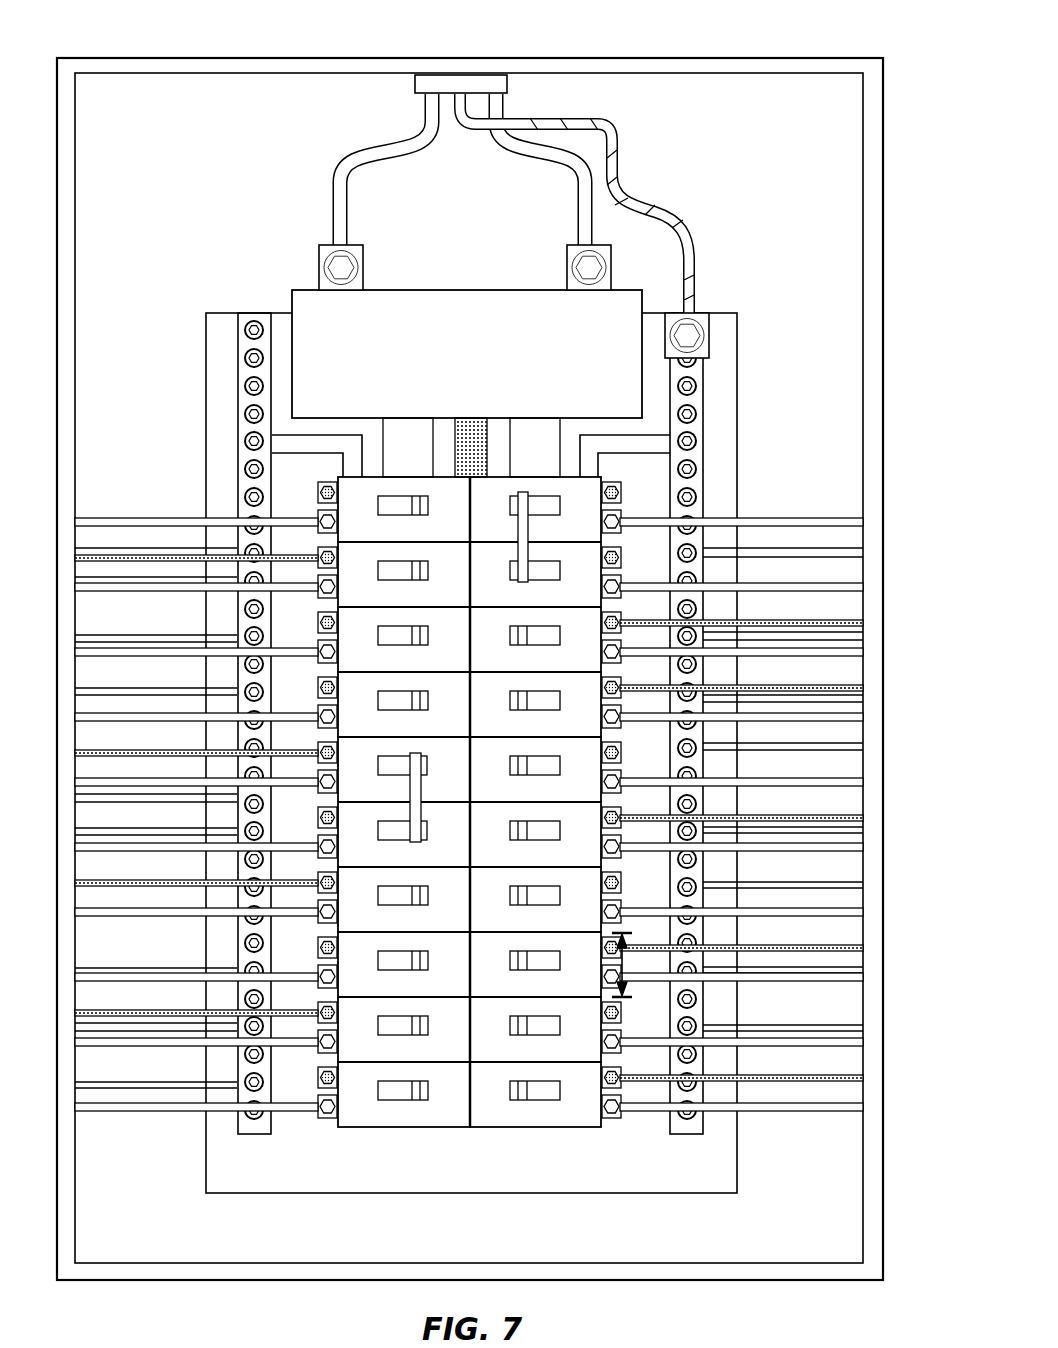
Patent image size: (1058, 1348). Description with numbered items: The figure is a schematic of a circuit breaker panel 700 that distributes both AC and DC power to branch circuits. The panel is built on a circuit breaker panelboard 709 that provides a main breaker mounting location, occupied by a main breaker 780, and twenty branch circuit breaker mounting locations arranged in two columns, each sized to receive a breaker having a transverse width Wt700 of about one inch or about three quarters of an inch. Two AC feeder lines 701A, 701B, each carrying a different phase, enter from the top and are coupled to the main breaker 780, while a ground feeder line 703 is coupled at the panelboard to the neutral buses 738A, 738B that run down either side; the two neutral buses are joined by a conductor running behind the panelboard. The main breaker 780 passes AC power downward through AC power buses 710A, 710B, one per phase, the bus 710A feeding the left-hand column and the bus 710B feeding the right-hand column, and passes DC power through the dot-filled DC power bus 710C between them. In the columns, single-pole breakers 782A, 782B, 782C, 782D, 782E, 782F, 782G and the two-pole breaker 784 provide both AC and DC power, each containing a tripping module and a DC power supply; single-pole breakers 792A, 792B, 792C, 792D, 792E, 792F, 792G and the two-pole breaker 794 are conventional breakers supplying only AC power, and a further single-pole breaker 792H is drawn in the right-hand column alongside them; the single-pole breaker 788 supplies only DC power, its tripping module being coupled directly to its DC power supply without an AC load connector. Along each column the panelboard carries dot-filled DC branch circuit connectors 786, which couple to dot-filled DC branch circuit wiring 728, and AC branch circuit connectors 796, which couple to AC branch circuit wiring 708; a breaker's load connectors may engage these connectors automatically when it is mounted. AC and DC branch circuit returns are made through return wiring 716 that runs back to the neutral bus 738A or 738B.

The circuit breaker panel 700 is at (636, 34).
The AC feeder line 701A is at (345, 172).
The AC feeder line 701B is at (527, 170).
The ground feeder line 703 is at (650, 207).
The circuit breaker panelboard 709 is at (227, 313).
The neutral bus 738A is at (240, 380).
The neutral bus 738B is at (703, 382).
The main breaker 780 is at (425, 288).
The AC power bus 710A is at (412, 430).
The AC power bus 710B is at (538, 430).
The DC power bus 710C is at (463, 423).
The AC branch circuit wiring 708 is at (115, 515).
The DC branch circuit wiring 728 is at (120, 880).
The return wiring 716 is at (113, 1077).
The single-pole branch circuit breaker 792A is at (390, 538).
The single-pole branch circuit breaker 792B is at (390, 668).
The single-pole branch circuit breaker 792C is at (390, 733).
The single-pole branch circuit breaker 792D is at (390, 993).
The single-pole branch circuit breaker 792E is at (390, 1123).
The single-pole branch circuit breaker 792F is at (523, 798).
The single-pole branch circuit breaker 792G is at (523, 928).
The circuit breaker 792H is at (523, 1058).
The single-pole branch circuit breaker 782A is at (416, 603).
The single-pole branch circuit breaker 782B is at (416, 928).
The single-pole branch circuit breaker 782C is at (416, 1058).
The single-pole branch circuit breaker 782D is at (549, 668).
The single-pole branch circuit breaker 782E is at (549, 733).
The single-pole branch circuit breaker 782F is at (549, 863).
The single-pole branch circuit breaker 782G is at (549, 993).
The two-pole circuit breaker 784 is at (430, 798).
The two-pole branch circuit breaker 794 is at (509, 538).
The single-pole branch circuit breaker 788 is at (563, 1123).
The DC branch circuit connector 786 is at (318, 1083).
The AC branch circuit connector 796 is at (325, 1125).
The transverse width Wt700 is at (626, 965).